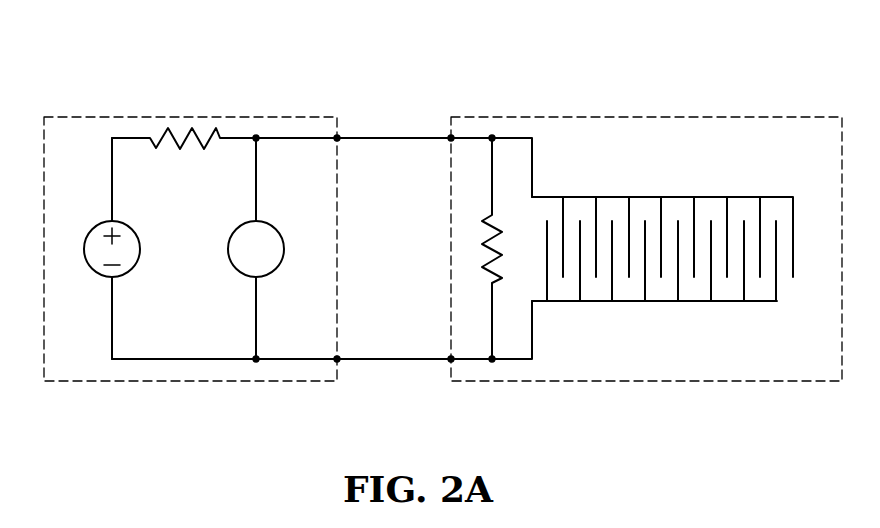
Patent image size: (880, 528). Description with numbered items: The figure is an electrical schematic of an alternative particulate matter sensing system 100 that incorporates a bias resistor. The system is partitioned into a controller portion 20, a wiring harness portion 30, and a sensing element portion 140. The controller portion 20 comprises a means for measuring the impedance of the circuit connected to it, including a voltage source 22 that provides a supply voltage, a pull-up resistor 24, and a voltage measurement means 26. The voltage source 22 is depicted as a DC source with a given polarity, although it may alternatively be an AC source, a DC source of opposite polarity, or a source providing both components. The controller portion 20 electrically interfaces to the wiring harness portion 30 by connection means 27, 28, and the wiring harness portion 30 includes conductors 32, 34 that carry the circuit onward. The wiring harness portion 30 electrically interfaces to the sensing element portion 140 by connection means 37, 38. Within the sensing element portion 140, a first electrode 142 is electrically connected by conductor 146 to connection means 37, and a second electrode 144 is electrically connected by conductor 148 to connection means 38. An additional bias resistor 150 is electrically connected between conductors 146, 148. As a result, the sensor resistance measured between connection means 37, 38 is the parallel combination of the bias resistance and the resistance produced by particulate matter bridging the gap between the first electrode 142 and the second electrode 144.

The particulate matter sensing system 100 is at (203, 92).
The controller portion 20 is at (265, 113).
The voltage source 22 is at (73, 263).
The pull-up resistor 24 is at (163, 137).
The voltage measurement means 26 is at (237, 270).
The connection means 27 is at (337, 138).
The connection means 28 is at (337, 359).
The wiring harness portion 30 is at (421, 119).
The conductor 32 is at (380, 138).
The conductor 34 is at (378, 360).
The connection means 37 is at (451, 138).
The connection means 38 is at (451, 359).
The sensing element portion 140 is at (768, 115).
The first electrode 142 is at (647, 197).
The second electrode 144 is at (646, 302).
The conductor 146 is at (518, 138).
The conductor 148 is at (517, 360).
The bias resistor 150 is at (500, 228).